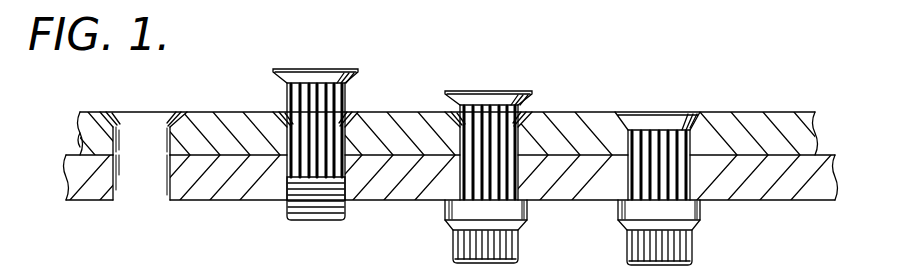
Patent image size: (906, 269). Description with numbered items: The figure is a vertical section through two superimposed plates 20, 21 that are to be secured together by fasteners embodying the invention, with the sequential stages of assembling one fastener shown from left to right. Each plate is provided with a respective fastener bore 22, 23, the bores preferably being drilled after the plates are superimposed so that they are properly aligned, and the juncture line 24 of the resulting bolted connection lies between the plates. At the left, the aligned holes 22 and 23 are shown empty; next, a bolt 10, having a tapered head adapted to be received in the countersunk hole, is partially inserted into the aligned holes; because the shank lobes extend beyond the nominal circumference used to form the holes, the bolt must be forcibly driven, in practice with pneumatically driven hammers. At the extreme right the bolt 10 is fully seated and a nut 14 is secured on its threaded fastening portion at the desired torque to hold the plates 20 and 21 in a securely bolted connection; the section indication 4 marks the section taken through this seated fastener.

The bolt 10 is at (346, 104).
The nut 14 is at (518, 247).
The plate 20 is at (246, 123).
The plate 21 is at (238, 188).
The fastener bore 22 is at (152, 127).
The fastener bore 23 is at (170, 200).
The juncture line 24 is at (80, 147).
The section line 4- 4 is at (622, 143).